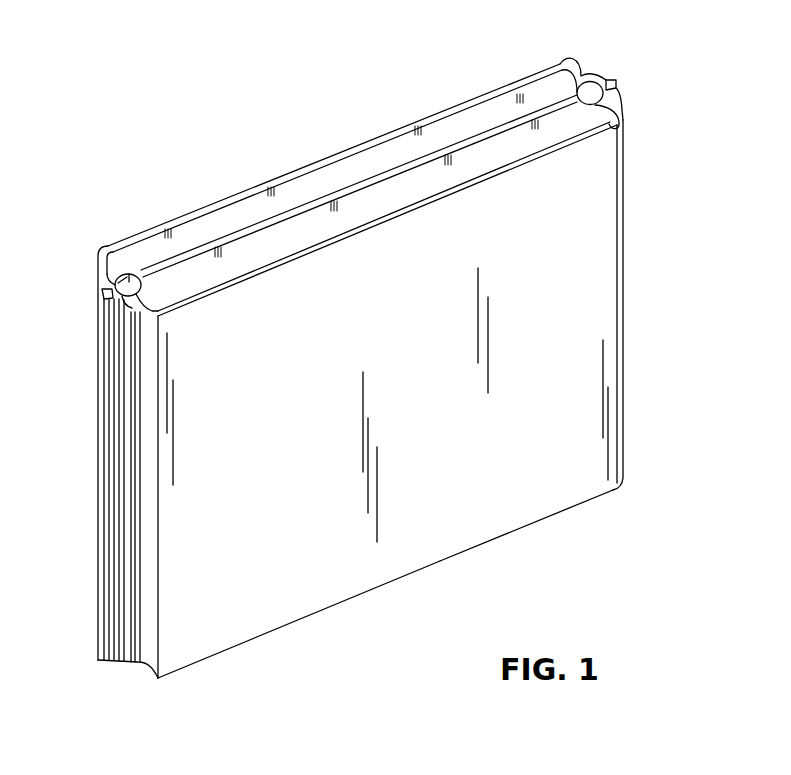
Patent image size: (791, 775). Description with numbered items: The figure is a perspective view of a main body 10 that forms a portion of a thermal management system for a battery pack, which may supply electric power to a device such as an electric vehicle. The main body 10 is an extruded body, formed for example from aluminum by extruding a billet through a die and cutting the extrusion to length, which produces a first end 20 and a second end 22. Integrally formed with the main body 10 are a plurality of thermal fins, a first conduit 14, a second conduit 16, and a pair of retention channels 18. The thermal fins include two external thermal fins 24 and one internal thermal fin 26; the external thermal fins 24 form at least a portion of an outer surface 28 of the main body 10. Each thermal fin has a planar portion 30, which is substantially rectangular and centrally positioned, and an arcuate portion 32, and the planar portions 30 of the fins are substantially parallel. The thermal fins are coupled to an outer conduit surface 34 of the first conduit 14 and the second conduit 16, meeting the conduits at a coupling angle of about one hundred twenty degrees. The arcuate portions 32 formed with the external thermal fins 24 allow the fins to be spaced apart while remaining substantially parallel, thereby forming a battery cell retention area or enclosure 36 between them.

The main body 10 is at (198, 142).
The first conduit 14 is at (115, 284).
The second conduit 16 is at (592, 91).
The retention channels 18 is at (113, 360).
The first end 20 is at (498, 89).
The second end 22 is at (563, 513).
The external thermal fins 24 is at (395, 131).
The internal thermal fin 26 is at (473, 143).
The outer surface 28 is at (409, 415).
The planar portion 30 is at (430, 553).
The arcuate portion 32 is at (623, 290).
The outer conduit surface 34 is at (125, 320).
The battery cell retention area 36 is at (341, 162).